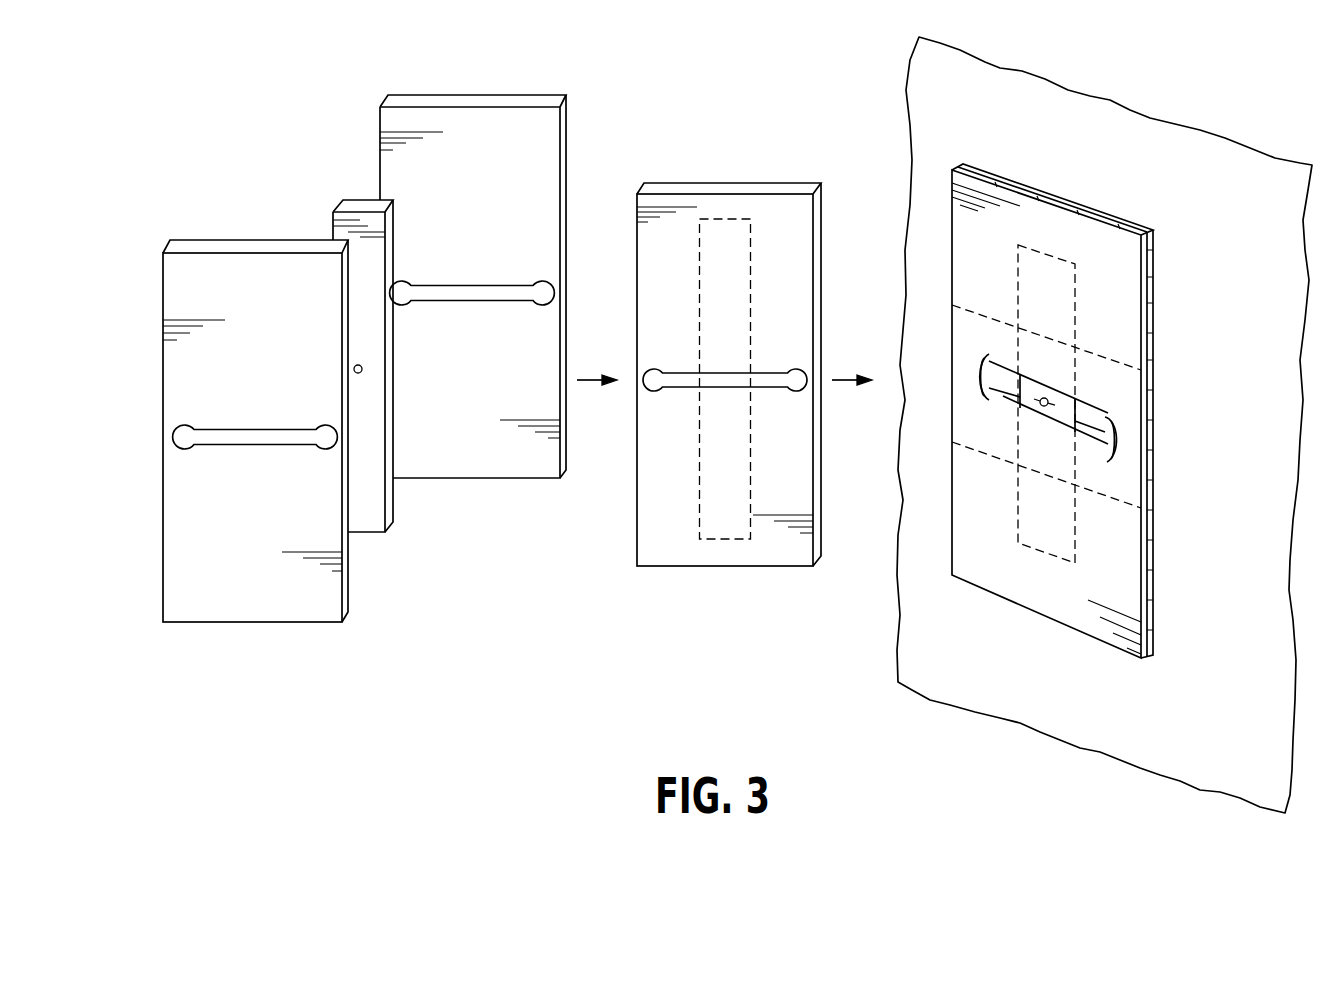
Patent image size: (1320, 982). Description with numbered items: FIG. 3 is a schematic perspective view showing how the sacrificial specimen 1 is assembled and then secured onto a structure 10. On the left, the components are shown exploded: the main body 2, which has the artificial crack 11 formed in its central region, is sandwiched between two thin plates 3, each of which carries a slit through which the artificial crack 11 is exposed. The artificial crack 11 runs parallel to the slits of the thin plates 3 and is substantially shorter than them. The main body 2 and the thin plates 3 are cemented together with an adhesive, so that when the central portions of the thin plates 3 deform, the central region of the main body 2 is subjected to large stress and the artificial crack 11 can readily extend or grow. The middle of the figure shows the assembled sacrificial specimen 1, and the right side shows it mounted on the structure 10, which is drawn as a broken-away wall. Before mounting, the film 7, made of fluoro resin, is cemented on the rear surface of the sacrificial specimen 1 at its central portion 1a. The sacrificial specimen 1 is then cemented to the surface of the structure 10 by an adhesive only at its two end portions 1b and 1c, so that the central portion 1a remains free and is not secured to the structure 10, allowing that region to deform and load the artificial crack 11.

The sacrificial specimen 1 is at (708, 183).
The central portion of the sacrificial specimen 1a is at (1181, 373).
The end portion of the sacrificial specimen 1b is at (1181, 232).
The end portion of the sacrificial specimen 1c is at (1181, 505).
The main body 2 is at (377, 390).
The thin plate 3 is at (257, 593).
The film 7 is at (1155, 433).
The structure 10 is at (1247, 728).
The artificial crack 11 is at (362, 369).